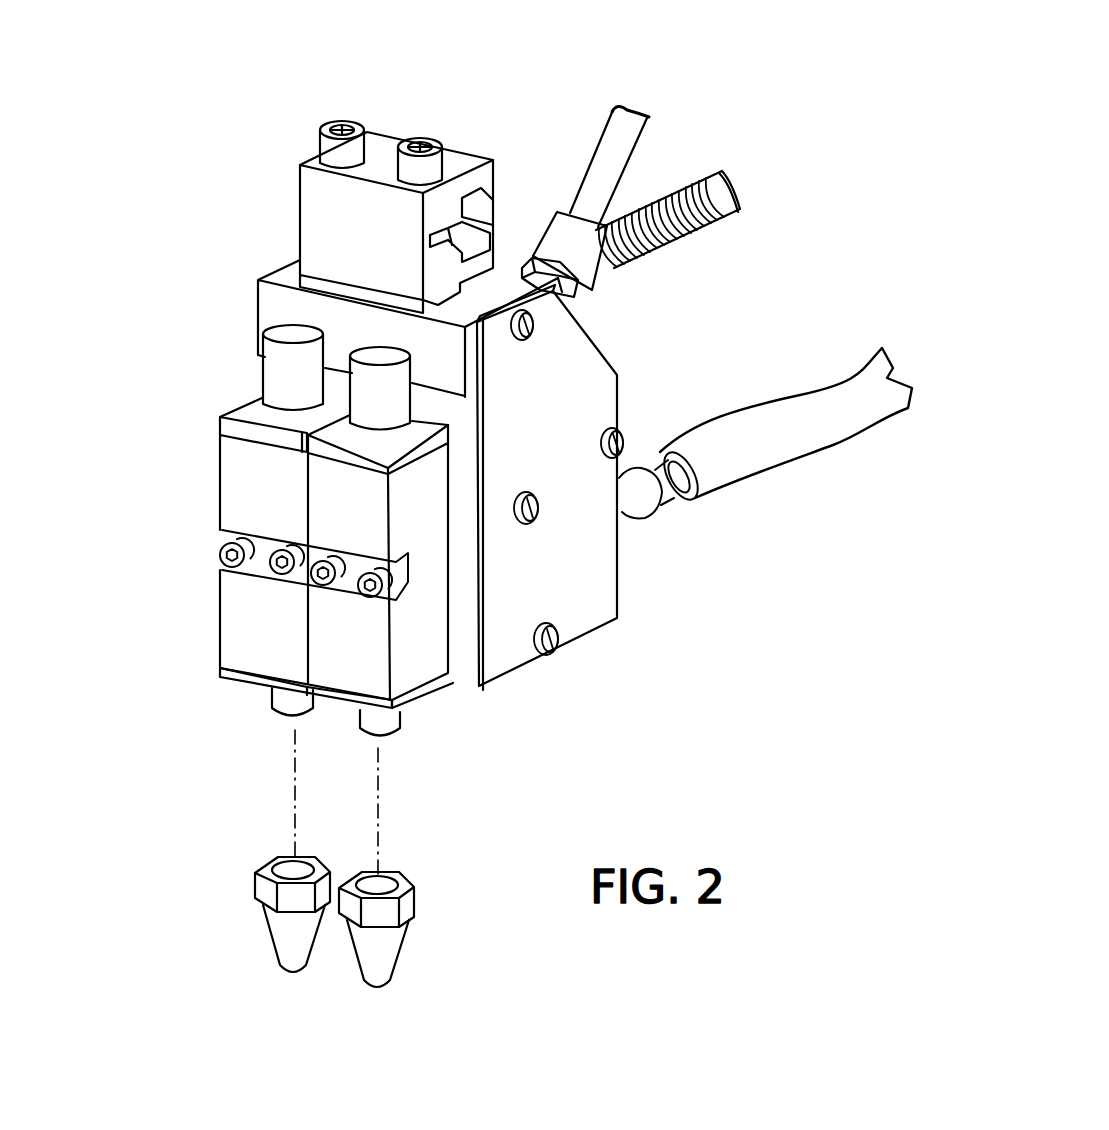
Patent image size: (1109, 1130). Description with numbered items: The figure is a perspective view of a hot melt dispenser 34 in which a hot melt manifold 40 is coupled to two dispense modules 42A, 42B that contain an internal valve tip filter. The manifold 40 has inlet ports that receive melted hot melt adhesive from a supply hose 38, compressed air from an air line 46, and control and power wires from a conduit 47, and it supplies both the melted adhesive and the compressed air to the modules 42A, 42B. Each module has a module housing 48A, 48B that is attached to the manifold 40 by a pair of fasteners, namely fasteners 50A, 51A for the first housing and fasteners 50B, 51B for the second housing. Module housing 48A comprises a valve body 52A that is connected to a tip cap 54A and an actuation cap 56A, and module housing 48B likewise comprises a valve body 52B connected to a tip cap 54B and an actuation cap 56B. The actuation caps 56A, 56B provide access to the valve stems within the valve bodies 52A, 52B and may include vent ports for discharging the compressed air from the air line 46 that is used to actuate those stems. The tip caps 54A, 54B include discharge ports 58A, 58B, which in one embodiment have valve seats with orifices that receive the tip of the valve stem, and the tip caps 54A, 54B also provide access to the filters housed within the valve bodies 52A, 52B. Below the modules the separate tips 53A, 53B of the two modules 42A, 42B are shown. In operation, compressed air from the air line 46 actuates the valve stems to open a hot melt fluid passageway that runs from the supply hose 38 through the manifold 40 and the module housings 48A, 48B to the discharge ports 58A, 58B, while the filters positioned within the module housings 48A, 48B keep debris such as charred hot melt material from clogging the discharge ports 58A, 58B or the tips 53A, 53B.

The dispenser 34 is at (738, 116).
The supply hose 38 is at (778, 440).
The hot melt manifold 40 is at (604, 620).
The dispense module 42A is at (172, 698).
The dispense module 42B is at (434, 748).
The air line 46 is at (612, 143).
The conduit 47 is at (688, 226).
The module housing 48A is at (208, 476).
The module housing 48B is at (464, 469).
The fastener 50A is at (222, 553).
The fastener 50B is at (330, 590).
The fastener 51A is at (277, 567).
The fastener 51B is at (392, 587).
The valve body 52A is at (232, 443).
The valve body 52B is at (420, 512).
The tip 53A is at (272, 940).
The tip 53B is at (400, 962).
The tip cap 54A is at (233, 678).
The tip cap 54B is at (334, 695).
The actuation cap 56A is at (277, 378).
The actuation cap 56B is at (400, 395).
The discharge port 58A is at (290, 713).
The discharge port 58B is at (382, 730).